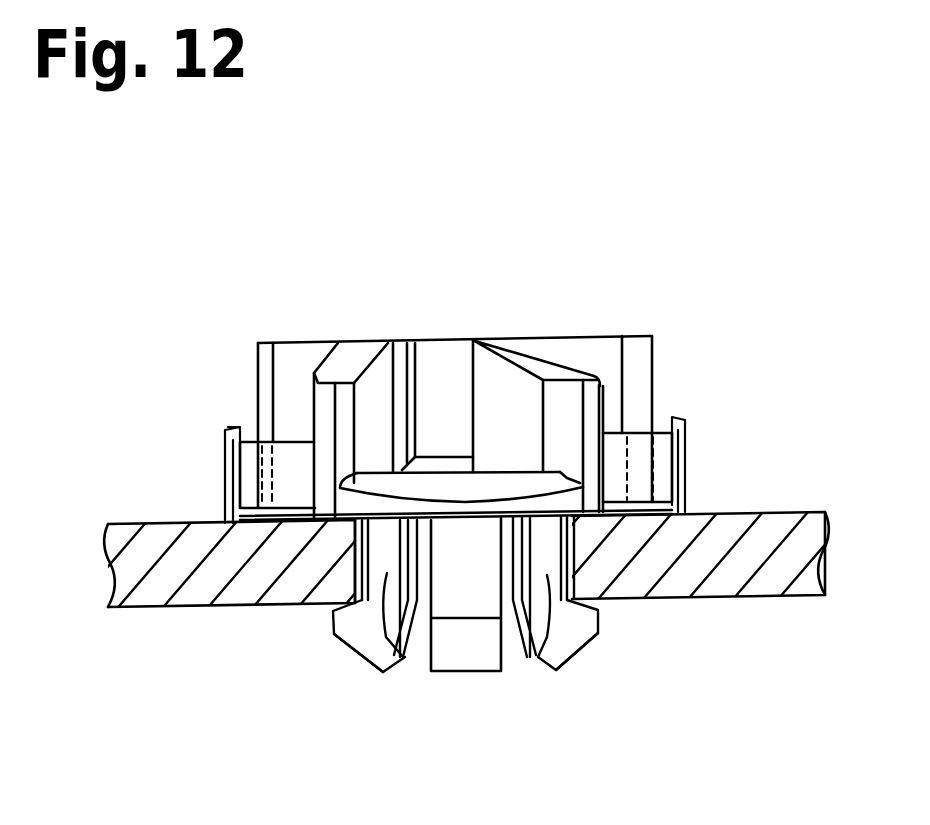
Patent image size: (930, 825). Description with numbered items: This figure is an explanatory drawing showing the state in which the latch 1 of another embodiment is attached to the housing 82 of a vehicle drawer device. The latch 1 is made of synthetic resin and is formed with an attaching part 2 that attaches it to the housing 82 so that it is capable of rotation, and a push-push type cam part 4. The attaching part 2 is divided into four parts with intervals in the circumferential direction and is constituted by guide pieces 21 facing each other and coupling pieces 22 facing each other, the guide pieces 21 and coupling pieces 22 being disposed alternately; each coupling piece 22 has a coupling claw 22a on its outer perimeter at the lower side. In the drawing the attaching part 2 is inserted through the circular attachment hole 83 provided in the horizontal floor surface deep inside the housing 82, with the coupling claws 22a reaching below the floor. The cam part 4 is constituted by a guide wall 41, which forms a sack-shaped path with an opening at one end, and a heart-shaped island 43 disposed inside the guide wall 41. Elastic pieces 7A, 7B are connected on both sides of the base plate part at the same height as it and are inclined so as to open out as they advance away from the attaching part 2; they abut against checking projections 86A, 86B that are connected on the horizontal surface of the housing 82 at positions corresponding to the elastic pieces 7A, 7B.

The latch 1 is at (652, 306).
The attaching part 2 is at (496, 690).
The cam part 4 is at (321, 325).
The elastic piece 7A is at (293, 463).
The elastic piece 7B is at (634, 446).
The guide piece 21 is at (462, 650).
The coupling piece 22 is at (396, 673).
The coupling claw 22a is at (363, 636).
The guide wall 41 is at (587, 335).
The heart-shaped island 43 is at (450, 363).
The housing 82 is at (748, 567).
The attachment hole 83 is at (585, 540).
The checking projection 86A is at (233, 452).
The checking projection 86B is at (680, 455).